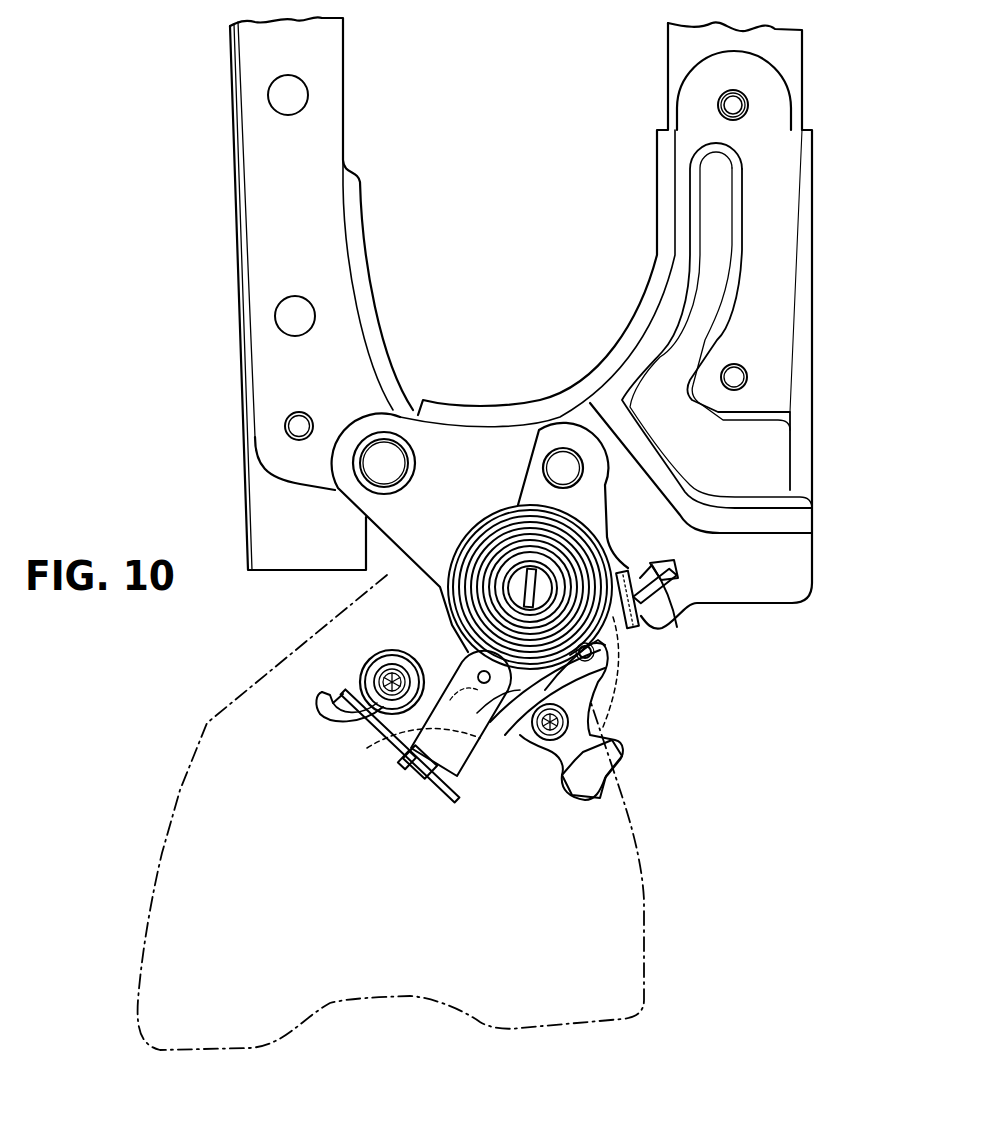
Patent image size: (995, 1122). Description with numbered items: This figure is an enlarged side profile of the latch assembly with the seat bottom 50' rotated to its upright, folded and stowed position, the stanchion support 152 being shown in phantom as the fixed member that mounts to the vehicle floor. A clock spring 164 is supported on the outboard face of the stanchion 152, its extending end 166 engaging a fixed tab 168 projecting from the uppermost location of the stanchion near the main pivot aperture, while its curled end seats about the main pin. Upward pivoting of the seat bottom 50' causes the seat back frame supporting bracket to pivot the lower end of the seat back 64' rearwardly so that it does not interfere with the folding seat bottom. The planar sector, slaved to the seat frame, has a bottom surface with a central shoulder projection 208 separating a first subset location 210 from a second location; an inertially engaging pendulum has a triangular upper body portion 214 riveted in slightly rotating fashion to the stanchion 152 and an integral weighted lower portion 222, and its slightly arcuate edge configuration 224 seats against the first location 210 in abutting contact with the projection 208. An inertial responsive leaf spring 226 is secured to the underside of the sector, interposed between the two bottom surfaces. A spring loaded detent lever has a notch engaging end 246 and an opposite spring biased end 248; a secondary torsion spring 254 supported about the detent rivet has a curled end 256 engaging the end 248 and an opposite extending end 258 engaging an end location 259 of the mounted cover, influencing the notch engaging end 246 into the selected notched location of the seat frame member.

The seat bottom 50' is at (622, 316).
The seat back 64' is at (295, 293).
The stanchion support 152 is at (175, 860).
The clock spring 164 is at (553, 562).
The extending end 166 is at (641, 620).
The fixed tab 168 is at (656, 566).
The shoulder projection 208 is at (605, 670).
The first subset location 210 is at (470, 737).
The upper body portion 214 is at (567, 693).
The weighted lower portion 222 is at (590, 770).
The arcuate edge configuration 224 is at (477, 713).
The leaf spring 226 is at (608, 640).
The notch engaging end 246 is at (375, 746).
The spring biased end 248 is at (330, 723).
The secondary torsion spring 254 is at (393, 650).
The curled end 256 is at (345, 690).
The opposite extending end 258 is at (438, 765).
The end location 259 is at (425, 775).